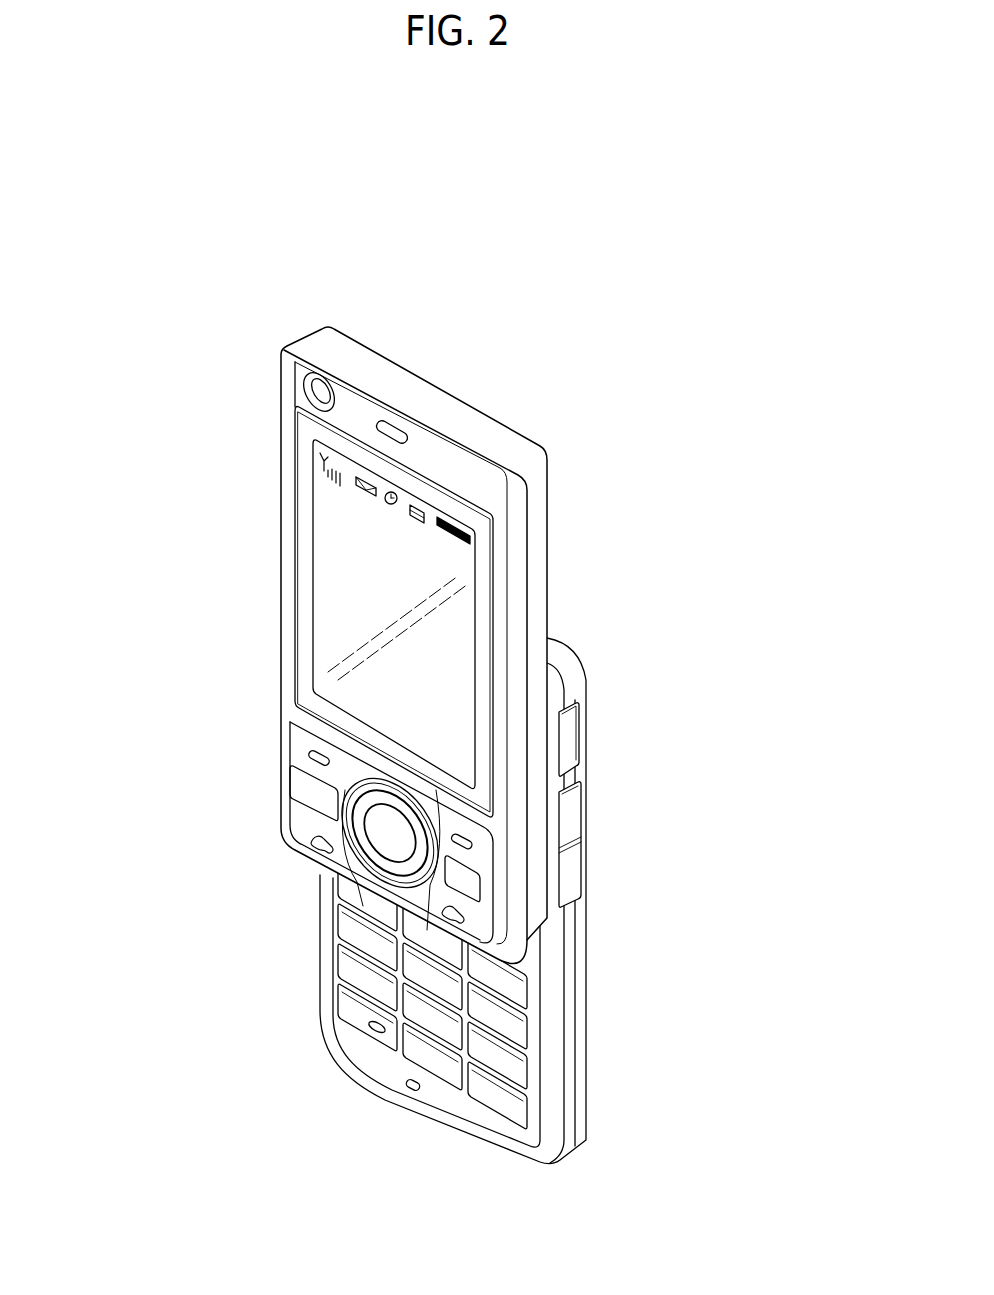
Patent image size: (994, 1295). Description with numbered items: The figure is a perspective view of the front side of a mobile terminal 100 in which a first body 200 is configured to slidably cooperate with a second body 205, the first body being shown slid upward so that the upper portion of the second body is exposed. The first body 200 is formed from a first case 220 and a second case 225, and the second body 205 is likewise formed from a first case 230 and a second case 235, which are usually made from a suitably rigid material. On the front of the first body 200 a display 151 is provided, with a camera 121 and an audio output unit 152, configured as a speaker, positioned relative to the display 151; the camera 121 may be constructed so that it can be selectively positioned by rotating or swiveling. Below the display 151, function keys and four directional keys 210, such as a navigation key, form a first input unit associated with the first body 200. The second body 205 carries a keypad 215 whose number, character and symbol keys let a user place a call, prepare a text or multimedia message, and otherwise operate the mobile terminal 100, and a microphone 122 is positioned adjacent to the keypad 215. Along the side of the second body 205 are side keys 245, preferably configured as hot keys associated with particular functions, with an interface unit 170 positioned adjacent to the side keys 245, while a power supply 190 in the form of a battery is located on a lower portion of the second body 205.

The mobile terminal 100 is at (583, 350).
The camera 121 is at (320, 390).
The microphone 122 is at (413, 1092).
The display 151 is at (325, 560).
The audio output unit 152 is at (393, 428).
The interface unit 170 is at (570, 732).
The power supply 190 is at (578, 1016).
The first body 200 is at (245, 466).
The second body 205 is at (310, 943).
The function keys 210 is at (305, 787).
The keypad 215 is at (345, 1000).
The first case 220 is at (518, 548).
The second case 225 is at (538, 512).
The first case 230 is at (555, 677).
The second case 235 is at (582, 700).
The side keys 245 is at (572, 870).